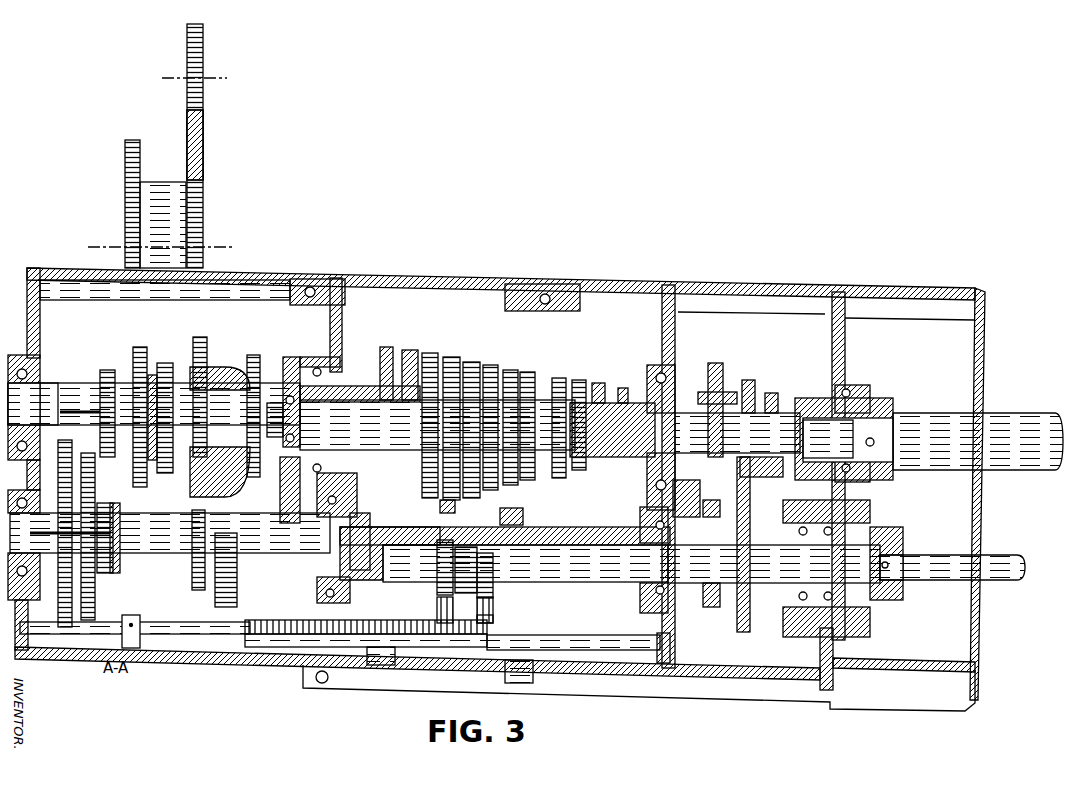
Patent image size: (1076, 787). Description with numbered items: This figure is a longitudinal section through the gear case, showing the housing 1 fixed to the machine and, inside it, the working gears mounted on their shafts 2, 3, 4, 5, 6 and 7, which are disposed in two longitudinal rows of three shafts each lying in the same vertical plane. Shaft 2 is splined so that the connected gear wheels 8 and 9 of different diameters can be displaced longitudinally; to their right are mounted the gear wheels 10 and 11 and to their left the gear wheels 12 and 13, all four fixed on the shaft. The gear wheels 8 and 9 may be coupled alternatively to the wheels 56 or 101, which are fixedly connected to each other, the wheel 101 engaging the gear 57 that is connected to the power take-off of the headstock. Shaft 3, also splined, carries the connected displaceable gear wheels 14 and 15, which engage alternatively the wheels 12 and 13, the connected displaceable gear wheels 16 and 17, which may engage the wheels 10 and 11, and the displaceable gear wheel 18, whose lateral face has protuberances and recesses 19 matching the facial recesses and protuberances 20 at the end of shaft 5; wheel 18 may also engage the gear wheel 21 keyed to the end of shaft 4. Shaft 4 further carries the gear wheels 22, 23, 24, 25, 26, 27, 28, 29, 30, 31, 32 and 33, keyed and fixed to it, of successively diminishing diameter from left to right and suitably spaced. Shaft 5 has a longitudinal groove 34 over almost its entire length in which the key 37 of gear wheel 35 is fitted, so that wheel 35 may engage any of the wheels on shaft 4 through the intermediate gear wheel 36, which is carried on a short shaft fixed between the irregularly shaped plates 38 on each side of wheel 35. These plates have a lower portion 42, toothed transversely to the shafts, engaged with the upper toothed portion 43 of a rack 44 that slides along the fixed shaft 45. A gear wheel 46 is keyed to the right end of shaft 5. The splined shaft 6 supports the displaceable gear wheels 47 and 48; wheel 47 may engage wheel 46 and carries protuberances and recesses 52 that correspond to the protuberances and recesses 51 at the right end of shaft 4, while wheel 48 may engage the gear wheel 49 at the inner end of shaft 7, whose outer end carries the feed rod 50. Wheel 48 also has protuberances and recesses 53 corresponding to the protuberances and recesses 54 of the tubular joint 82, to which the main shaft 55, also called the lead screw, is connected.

The housing 1 is at (245, 270).
The shaft 2 is at (80, 395).
The shaft 3 is at (145, 555).
The shaft 4 is at (370, 452).
The shaft 5 is at (380, 572).
The shaft 6 is at (693, 455).
The shaft 7 is at (775, 585).
The gear wheel 8 is at (165, 365).
The gear wheel 9 is at (140, 350).
The gear wheel 10 is at (253, 357).
The gear wheel 11 is at (200, 340).
The gear wheel 12 is at (108, 372).
The gear wheel 13 is at (50, 385).
The gear wheel 14 is at (101, 604).
The gear wheel 15 is at (60, 489).
The gear wheel 16 is at (197, 580).
The gear wheel 17 is at (215, 597).
The gear wheel 18 is at (283, 500).
The protuberances and recesses 19 is at (300, 580).
The facial recesses and protuberances 20 is at (320, 487).
The gear wheel 21 is at (292, 357).
The gear wheel 22 is at (387, 347).
The gear wheel 23 is at (410, 350).
The gear wheel 24 is at (430, 353).
The gear wheel 25 is at (451, 357).
The gear wheel 26 is at (471, 362).
The gear wheel 27 is at (490, 365).
The gear wheel 28 is at (510, 370).
The gear wheel 29 is at (528, 372).
The gear wheel 30 is at (558, 378).
The gear wheel 31 is at (578, 380).
The gear wheel 32 is at (598, 383).
The gear wheel 33 is at (623, 388).
The longitudinal groove 34 is at (398, 527).
The gear wheel 35 is at (440, 580).
The intermediate gear wheel 36 is at (440, 507).
The key 37 is at (523, 515).
The plates 38 is at (437, 605).
The lower portion 42 is at (494, 618).
The upper toothed portion 43 is at (427, 622).
The rack 44 is at (290, 648).
The fixed shaft 45 is at (157, 622).
The gear wheel 46 is at (712, 607).
The gear wheel 47 is at (715, 365).
The gear wheel 48 is at (748, 381).
The gear wheel 49 is at (748, 630).
The feed rod 50 is at (925, 581).
The protuberances and recesses 51 is at (672, 392).
The protuberances and recesses 52 is at (690, 482).
The protuberances and recesses 53 is at (785, 414).
The protuberances and recesses 54 is at (783, 480).
The main shaft 55 is at (925, 414).
The wheel 56 is at (142, 172).
The gear 57 is at (205, 58).
The tubular joint 82 is at (885, 482).
The wheel 101 is at (190, 200).